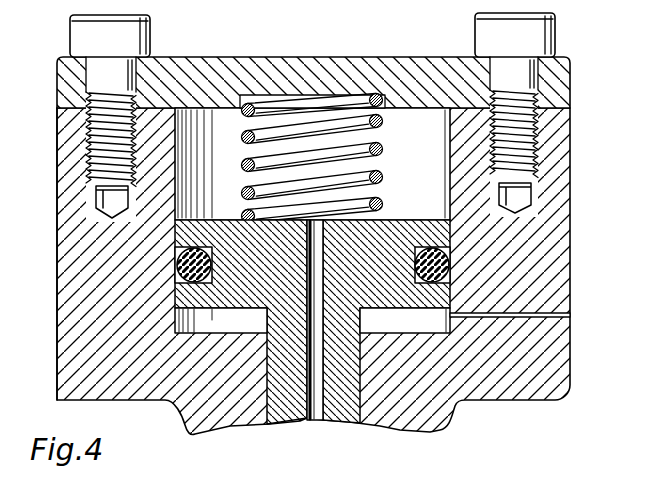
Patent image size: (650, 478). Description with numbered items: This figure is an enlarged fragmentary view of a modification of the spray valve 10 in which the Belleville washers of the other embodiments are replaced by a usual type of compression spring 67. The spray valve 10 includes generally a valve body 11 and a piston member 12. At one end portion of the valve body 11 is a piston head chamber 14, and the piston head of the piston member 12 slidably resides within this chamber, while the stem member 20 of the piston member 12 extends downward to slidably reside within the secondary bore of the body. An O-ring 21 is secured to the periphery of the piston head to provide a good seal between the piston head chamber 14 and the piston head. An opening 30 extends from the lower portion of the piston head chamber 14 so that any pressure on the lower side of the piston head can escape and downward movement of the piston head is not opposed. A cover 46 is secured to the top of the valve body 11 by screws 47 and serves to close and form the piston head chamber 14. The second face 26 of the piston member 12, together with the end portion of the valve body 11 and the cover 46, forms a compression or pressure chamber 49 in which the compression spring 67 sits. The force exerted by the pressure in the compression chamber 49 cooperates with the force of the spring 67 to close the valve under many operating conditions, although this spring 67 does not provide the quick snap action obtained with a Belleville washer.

The spray valve 10 is at (30, 228).
The valve body 11 is at (57, 288).
The piston member 12 is at (280, 412).
The piston head chamber 14 is at (413, 329).
The stem member 20 is at (345, 418).
The O-ring 21 is at (423, 247).
The second face 26 is at (430, 228).
The opening 30 is at (570, 316).
The cover 46 is at (372, 57).
The screws 47 is at (71, 44).
The compression chamber 49 is at (420, 143).
The compression spring 67 is at (255, 98).